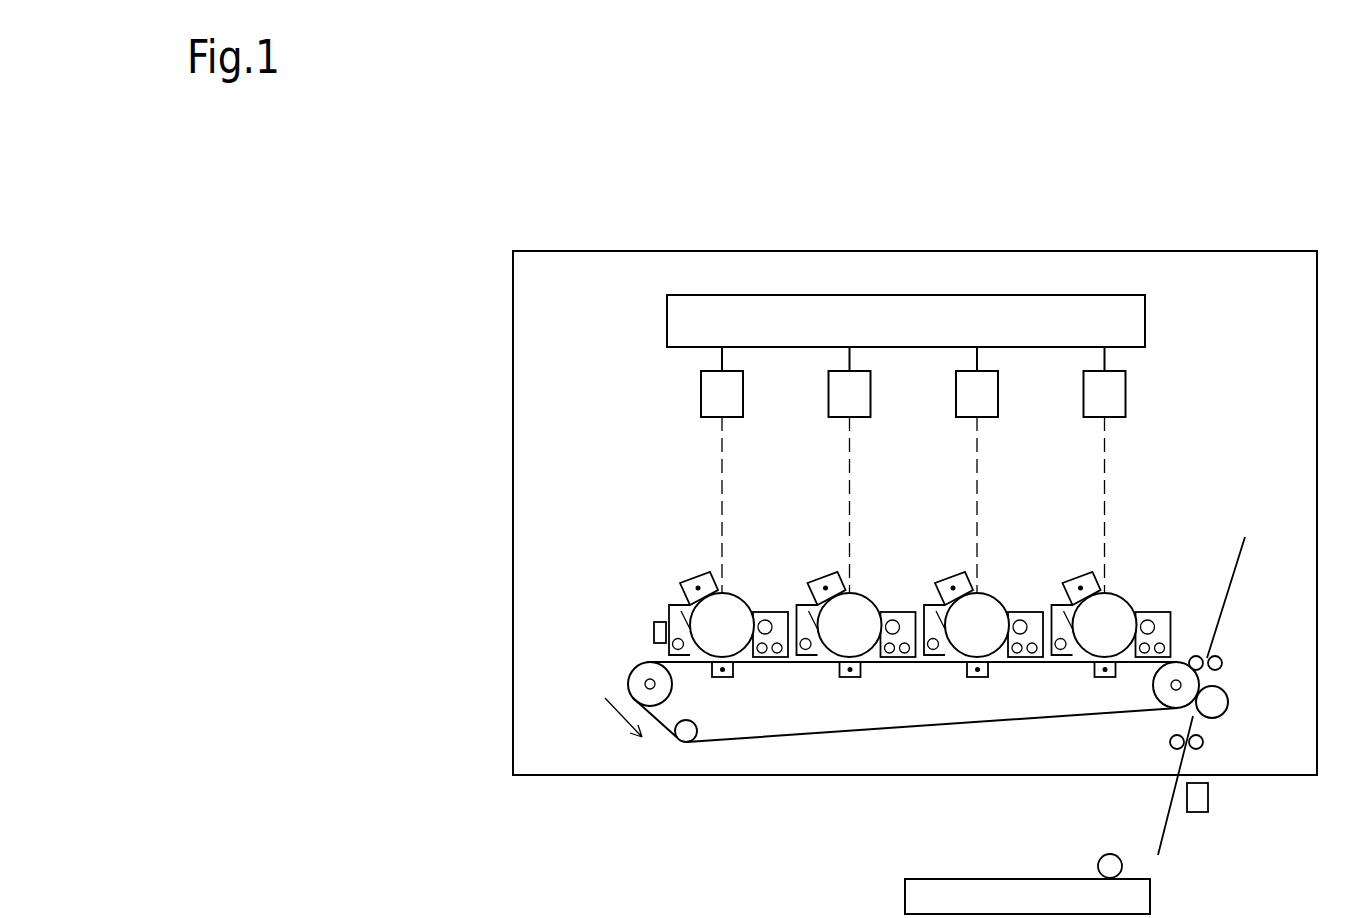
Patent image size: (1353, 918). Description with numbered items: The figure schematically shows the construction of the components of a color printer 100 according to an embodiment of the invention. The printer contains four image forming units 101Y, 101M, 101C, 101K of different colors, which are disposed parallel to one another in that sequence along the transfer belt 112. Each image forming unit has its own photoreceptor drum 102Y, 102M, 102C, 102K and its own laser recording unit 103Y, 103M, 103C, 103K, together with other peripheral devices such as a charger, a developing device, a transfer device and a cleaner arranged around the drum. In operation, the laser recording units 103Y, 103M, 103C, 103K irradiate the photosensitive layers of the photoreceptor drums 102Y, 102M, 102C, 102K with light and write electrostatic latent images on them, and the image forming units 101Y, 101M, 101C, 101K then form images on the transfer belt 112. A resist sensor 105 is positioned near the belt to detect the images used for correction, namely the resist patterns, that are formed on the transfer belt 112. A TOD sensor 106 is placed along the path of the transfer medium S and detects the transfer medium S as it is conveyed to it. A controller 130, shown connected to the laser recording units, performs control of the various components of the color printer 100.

The color printer 100 is at (482, 280).
The controller 130 is at (1145, 320).
The laser recording unit 103K is at (710, 401).
The laser recording unit 103C is at (838, 401).
The laser recording unit 103M is at (965, 401).
The laser recording unit 103Y is at (1093, 401).
The photoreceptor drum 102K is at (738, 598).
The photoreceptor drum 102C is at (862, 608).
The photoreceptor drum 102M is at (988, 606).
The photoreceptor drum 102Y is at (1113, 603).
The image forming unit 101K is at (735, 663).
The image forming unit 101C is at (866, 663).
The image forming unit 101M is at (992, 665).
The image forming unit 101Y is at (1088, 665).
The resist sensor 105 is at (653, 630).
The transfer belt 112 is at (922, 728).
The TOD sensor 106 is at (1208, 800).
The transfer medium S is at (1170, 812).